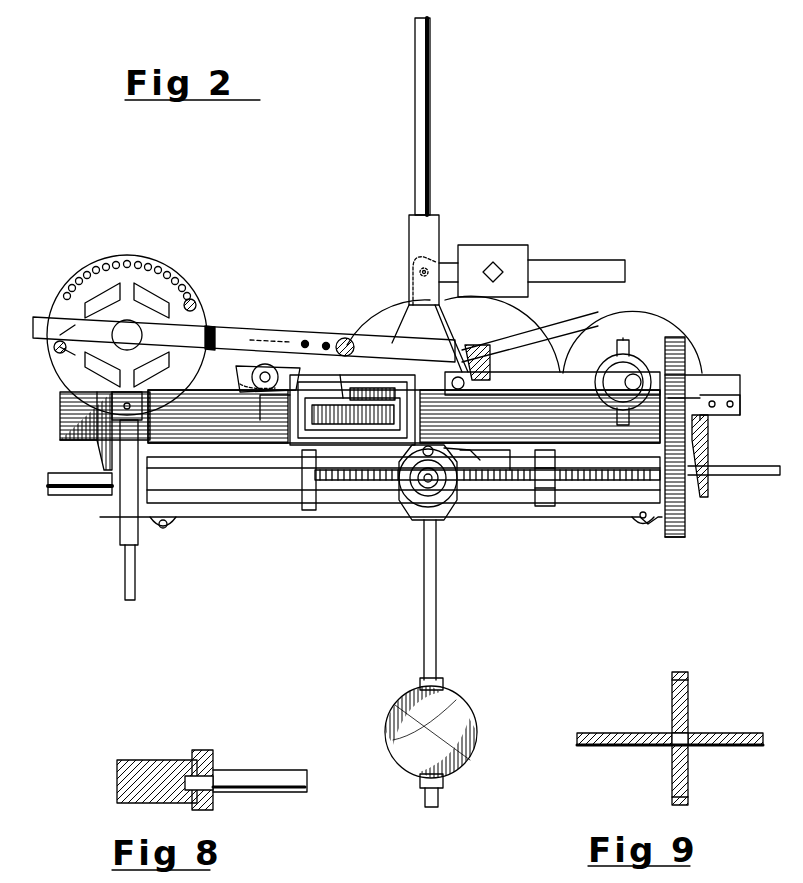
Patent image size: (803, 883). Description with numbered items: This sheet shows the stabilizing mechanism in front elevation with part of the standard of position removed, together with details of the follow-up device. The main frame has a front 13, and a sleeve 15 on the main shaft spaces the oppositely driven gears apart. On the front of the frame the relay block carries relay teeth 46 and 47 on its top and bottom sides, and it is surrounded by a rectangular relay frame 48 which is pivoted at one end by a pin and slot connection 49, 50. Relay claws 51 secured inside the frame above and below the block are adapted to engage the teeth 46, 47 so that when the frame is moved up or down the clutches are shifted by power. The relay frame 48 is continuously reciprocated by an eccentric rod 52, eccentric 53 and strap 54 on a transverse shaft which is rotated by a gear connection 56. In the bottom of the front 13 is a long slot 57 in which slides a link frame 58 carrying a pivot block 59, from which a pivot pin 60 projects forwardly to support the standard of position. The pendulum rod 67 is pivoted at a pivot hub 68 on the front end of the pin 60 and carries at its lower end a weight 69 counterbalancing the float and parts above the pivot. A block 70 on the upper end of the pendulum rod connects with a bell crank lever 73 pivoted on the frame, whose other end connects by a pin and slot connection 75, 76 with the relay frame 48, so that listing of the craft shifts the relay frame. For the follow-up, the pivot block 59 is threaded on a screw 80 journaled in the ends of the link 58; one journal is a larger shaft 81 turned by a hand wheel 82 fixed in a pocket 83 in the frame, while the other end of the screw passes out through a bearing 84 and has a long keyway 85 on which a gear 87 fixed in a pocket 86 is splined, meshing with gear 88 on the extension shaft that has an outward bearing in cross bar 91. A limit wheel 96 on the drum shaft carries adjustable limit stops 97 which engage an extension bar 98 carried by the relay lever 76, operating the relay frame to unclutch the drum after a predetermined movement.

In FIG. 2, the front of the main frame 13 is at (136, 416).
In FIG. 2, the sleeve 15 is at (404, 416).
In FIG. 2, the relay tooth 46 is at (355, 392).
In FIG. 2, the relay tooth 47 is at (365, 388).
In FIG. 2, the relay frame 48 is at (378, 440).
In FIG. 2, the pin of pin and slot connection 49 is at (550, 370).
In FIG. 2, the slot of pin and slot connection 50 is at (540, 416).
In FIG. 2, the relay claw 51 is at (335, 396).
In FIG. 2, the eccentric rod 52 is at (540, 378).
In FIG. 2, the eccentric 53 is at (614, 372).
In FIG. 2, the eccentric strap 54 is at (636, 360).
In FIG. 2, the gear connection 56 is at (678, 316).
In FIG. 2, the slot 57 is at (232, 497).
In FIG. 2, the link frame 58 is at (500, 492).
In FIG. 2, the pivot block 59 is at (456, 492).
In FIG. 2, the pivot pin 60 is at (418, 488).
In FIG. 2, the pendulum rod 67 is at (431, 104).
In FIG. 2, the pivot hub 68 is at (480, 452).
In FIG. 2, the weight 69 is at (431, 663).
In FIG. 2, the block 70 is at (430, 228).
In FIG. 2, the bell crank lever 73 is at (453, 334).
In FIG. 2, the pin of pin and slot connection 75 is at (244, 371).
In FIG. 2, the slot of pin and slot connection 76 is at (252, 380).
In FIG. 2, the screw 80 is at (545, 500).
In FIG. 8, the screw 80 is at (257, 772).
In FIG. 9, the screw 80 is at (626, 735).
In FIG. 2, the shaft 81 is at (90, 497).
In FIG. 8, the shaft 81 is at (156, 762).
In FIG. 2, the hand wheel 82 is at (121, 543).
In FIG. 2, the pocket 83 is at (112, 453).
In FIG. 2, the bearing 84 is at (712, 458).
In FIG. 9, the keyway 85 is at (745, 735).
In FIG. 2, the pocket 86 is at (690, 478).
In FIG. 2, the gear 87 is at (690, 530).
In FIG. 9, the gear 87 is at (690, 702).
In FIG. 2, the gear 88 is at (690, 360).
In FIG. 2, the cross bar 91 is at (58, 352).
In FIG. 2, the limit wheel 96 is at (200, 322).
In FIG. 2, the limit stop 97 is at (195, 305).
In FIG. 2, the extension bar 98 is at (278, 340).